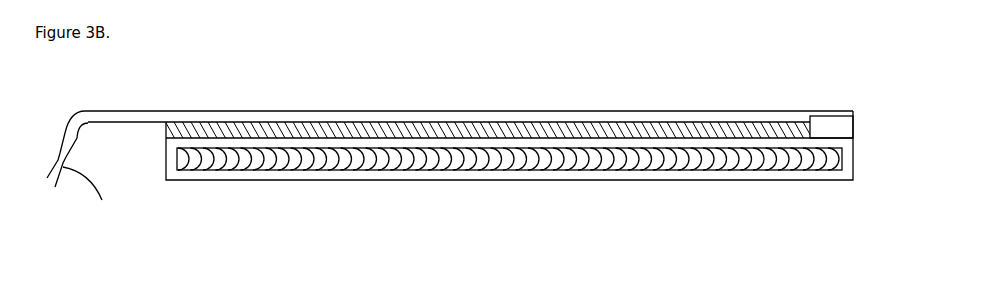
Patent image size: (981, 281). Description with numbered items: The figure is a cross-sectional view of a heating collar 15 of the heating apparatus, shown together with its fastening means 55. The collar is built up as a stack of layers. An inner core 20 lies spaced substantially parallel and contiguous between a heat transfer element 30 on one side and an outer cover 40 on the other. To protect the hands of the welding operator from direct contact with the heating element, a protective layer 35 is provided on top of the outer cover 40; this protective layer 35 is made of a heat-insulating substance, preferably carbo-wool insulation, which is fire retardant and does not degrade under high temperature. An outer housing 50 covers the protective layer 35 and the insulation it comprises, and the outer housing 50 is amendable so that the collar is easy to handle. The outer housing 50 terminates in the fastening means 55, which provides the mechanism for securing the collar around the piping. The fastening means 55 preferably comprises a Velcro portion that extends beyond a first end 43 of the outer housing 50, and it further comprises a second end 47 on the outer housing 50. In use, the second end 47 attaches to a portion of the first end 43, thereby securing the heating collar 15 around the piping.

The heating collar 15 is at (857, 155).
The inner core 20 is at (282, 160).
The heat transfer element 30 is at (430, 173).
The protective layer 35 is at (657, 125).
The outer cover 40 is at (347, 144).
The first end 43 is at (122, 110).
The second end 47 is at (832, 116).
The outer housing 50 is at (525, 115).
The fastening means 55 is at (73, 127).